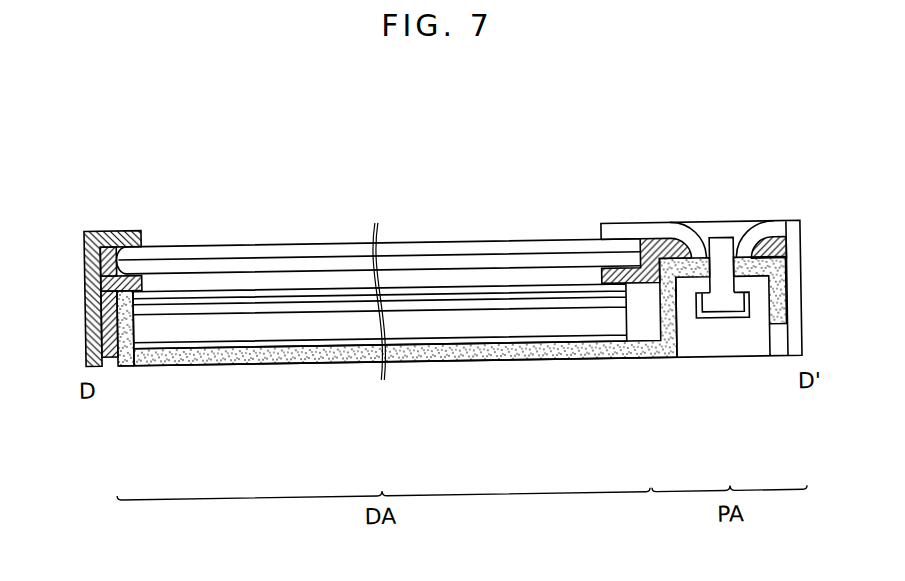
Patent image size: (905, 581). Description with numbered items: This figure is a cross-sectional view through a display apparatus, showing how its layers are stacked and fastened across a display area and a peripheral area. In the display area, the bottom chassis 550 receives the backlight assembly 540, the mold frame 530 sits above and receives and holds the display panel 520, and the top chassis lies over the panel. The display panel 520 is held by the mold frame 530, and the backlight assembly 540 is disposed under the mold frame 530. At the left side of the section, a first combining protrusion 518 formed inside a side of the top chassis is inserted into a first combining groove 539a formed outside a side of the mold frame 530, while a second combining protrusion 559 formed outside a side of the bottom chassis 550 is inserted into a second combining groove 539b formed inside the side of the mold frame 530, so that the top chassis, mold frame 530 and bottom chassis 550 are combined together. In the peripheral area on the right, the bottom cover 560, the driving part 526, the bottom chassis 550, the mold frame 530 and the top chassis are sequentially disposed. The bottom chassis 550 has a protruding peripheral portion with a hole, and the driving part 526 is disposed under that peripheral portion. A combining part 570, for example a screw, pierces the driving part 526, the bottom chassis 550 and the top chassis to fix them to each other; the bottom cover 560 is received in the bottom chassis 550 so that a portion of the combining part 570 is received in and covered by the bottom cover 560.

The first combining protrusion 518 is at (103, 283).
The display panel 520 is at (257, 246).
The driving part 526 is at (755, 297).
The mold frame 530 is at (660, 246).
The first combining groove 539a is at (115, 246).
The second combining groove 539b is at (103, 321).
The backlight assembly 540 is at (192, 291).
The bottom chassis 550 is at (305, 367).
The second combining protrusion 559 is at (116, 322).
The bottom cover 560 is at (703, 367).
The combining part 570 is at (723, 246).